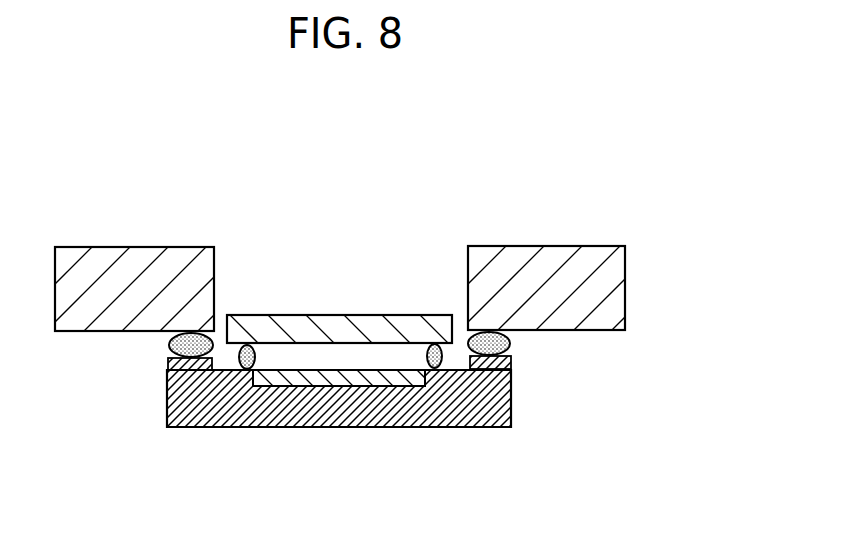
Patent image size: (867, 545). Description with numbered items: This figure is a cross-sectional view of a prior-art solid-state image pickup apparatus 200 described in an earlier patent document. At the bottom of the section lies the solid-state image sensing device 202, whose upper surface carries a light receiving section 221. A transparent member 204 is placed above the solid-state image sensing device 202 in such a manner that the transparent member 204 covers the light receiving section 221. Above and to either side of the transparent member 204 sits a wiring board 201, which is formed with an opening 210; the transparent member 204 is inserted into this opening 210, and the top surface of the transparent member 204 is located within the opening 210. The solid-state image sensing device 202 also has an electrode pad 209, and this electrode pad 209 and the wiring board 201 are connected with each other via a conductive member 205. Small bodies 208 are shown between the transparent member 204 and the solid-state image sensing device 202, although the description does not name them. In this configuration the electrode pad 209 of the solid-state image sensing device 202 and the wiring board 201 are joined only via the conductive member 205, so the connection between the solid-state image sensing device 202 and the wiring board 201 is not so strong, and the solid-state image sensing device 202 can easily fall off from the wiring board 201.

The solid-state image pickup apparatus 200 is at (705, 177).
The wiring board 201 is at (614, 281).
The solid-state image sensing device 202 is at (400, 410).
The transparent member 204 is at (342, 325).
The conductive member 205 is at (507, 337).
The bump 208 is at (249, 371).
The electrode pad 209 is at (511, 364).
The opening 210 is at (263, 278).
The light receiving section 221 is at (322, 387).